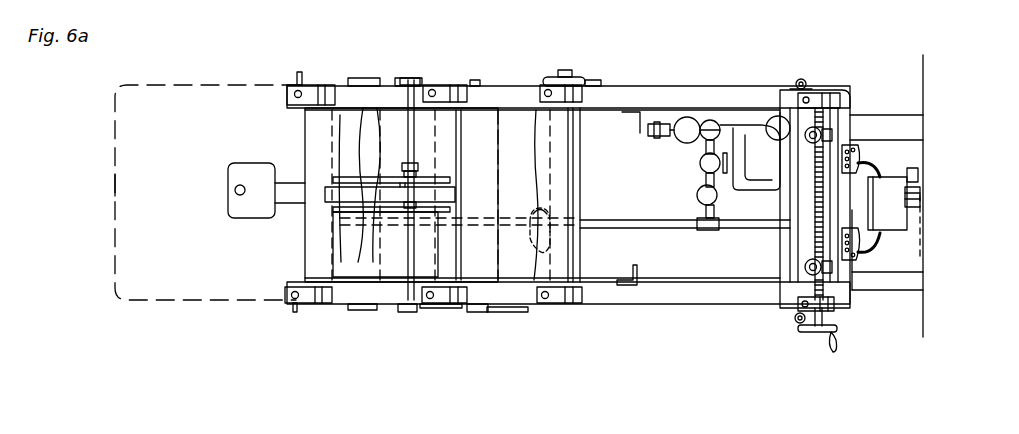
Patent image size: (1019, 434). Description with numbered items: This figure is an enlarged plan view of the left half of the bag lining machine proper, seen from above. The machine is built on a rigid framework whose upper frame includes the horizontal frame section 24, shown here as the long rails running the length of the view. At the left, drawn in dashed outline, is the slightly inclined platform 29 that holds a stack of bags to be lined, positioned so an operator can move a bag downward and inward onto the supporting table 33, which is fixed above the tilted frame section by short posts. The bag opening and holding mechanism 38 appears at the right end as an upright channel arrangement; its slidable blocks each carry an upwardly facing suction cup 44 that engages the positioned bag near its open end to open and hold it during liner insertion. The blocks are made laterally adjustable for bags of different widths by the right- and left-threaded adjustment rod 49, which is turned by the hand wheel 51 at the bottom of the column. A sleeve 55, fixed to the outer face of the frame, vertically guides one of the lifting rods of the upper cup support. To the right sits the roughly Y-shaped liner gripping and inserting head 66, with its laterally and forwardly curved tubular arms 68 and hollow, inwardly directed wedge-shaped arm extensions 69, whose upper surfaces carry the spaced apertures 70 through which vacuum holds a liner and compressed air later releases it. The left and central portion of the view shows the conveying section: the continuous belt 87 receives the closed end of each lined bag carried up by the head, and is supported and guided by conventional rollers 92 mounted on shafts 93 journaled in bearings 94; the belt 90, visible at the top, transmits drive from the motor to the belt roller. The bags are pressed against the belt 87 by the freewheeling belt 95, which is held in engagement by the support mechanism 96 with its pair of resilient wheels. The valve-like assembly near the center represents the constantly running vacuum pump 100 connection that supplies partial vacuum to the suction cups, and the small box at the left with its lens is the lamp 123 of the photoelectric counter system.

The frame section 24 is at (662, 97).
The platform 29 is at (126, 185).
The supporting table 33 is at (613, 268).
The bag opening and holding mechanism 38 is at (790, 299).
The suction cup 44 is at (820, 133).
The adjustment rod 49 is at (815, 178).
The hand wheel 51 is at (808, 333).
The sleeve 55 is at (807, 78).
The head 66 is at (900, 166).
The tubular arm 68 is at (878, 226).
The arm extension 69 is at (838, 236).
The aperture 70 is at (857, 149).
The continuous belt 87 is at (517, 181).
The belt 90 is at (553, 74).
The roller 92 is at (310, 138).
The shaft 93 is at (318, 80).
The bearing 94 is at (305, 99).
The freewheeling belt 95 is at (359, 172).
The support mechanism 96 is at (428, 168).
The vacuum pump 100 is at (728, 126).
The lamp 123 is at (246, 212).